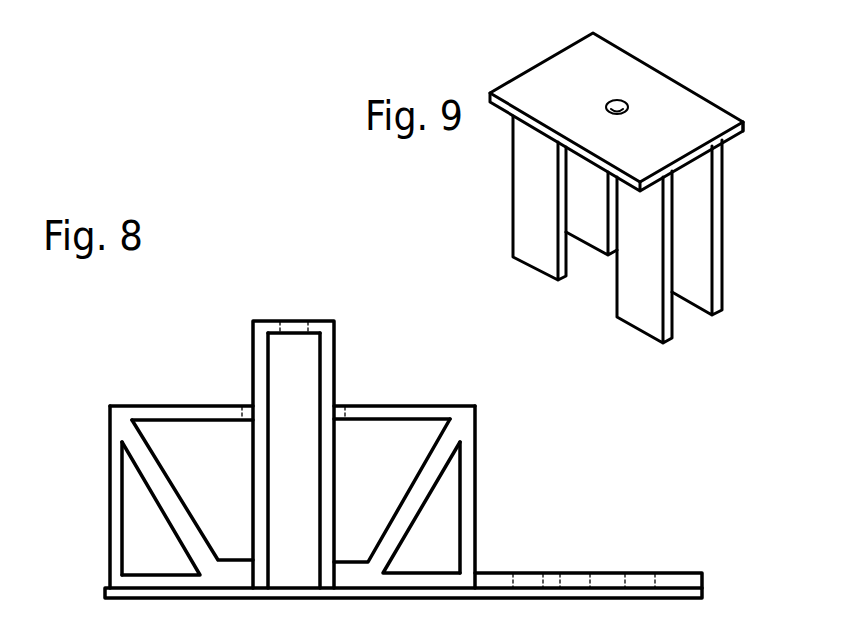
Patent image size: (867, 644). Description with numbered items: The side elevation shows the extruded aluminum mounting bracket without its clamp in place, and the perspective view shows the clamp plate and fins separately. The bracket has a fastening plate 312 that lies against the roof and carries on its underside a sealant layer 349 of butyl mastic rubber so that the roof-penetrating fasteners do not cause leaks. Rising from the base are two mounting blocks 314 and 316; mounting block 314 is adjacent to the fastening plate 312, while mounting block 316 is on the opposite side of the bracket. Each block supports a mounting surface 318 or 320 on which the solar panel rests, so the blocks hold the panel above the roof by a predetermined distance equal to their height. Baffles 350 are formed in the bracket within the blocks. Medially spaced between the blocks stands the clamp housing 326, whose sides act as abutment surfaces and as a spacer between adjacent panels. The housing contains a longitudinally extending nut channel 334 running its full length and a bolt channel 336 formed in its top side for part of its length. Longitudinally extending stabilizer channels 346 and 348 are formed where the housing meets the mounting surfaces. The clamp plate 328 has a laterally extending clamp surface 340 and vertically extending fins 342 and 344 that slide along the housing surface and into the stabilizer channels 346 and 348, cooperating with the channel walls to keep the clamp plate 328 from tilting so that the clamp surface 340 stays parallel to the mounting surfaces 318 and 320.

In FIG. 8, the fastening plate 312 is at (668, 572).
In FIG. 8, the mounting block 314 is at (478, 497).
In FIG. 8, the mounting block 316 is at (108, 458).
In FIG. 8, the mounting surface 318 is at (445, 402).
In FIG. 8, the mounting surface 320 is at (143, 402).
In FIG. 8, the clamp housing 326 is at (268, 320).
In FIG. 9, the clamp plate 328 is at (683, 82).
In FIG. 8, the nut channel 334 is at (302, 320).
In FIG. 8, the bolt channel 336 is at (300, 525).
In FIG. 9, the clamp surface 340 is at (735, 142).
In FIG. 9, the fin 342 is at (722, 268).
In FIG. 9, the fin 344 is at (513, 202).
In FIG. 8, the stabilizer channel 346 is at (342, 403).
In FIG. 8, the stabilizer channel 348 is at (247, 403).
In FIG. 8, the layer of butyl mastic rubber 349 is at (680, 598).
In FIG. 8, the baffle 350 is at (160, 510).